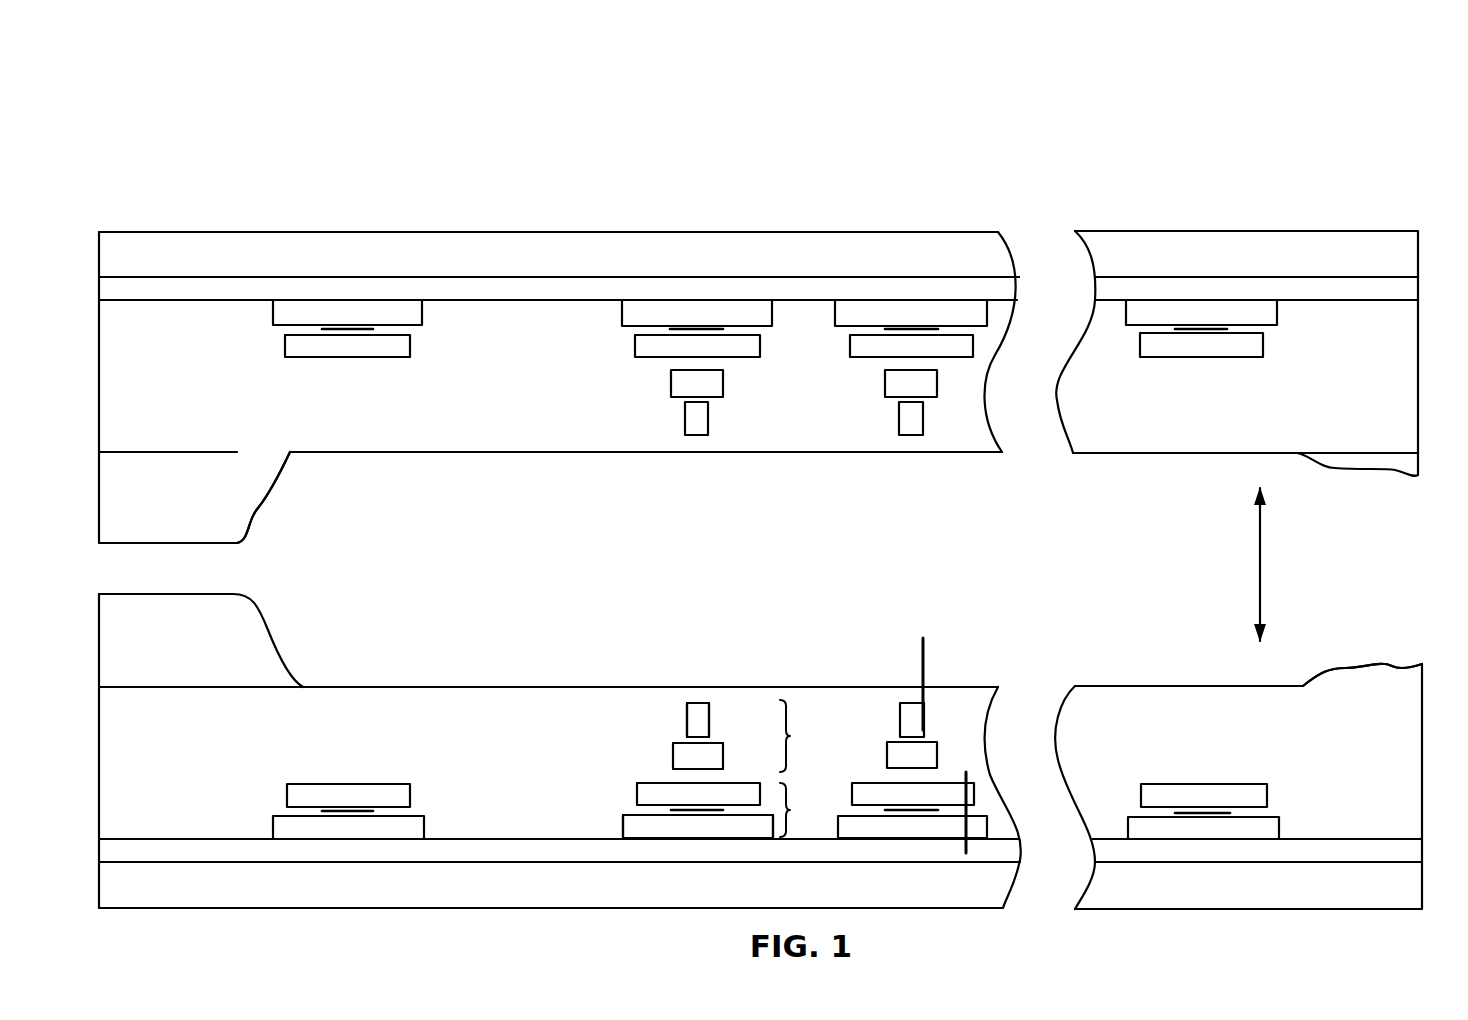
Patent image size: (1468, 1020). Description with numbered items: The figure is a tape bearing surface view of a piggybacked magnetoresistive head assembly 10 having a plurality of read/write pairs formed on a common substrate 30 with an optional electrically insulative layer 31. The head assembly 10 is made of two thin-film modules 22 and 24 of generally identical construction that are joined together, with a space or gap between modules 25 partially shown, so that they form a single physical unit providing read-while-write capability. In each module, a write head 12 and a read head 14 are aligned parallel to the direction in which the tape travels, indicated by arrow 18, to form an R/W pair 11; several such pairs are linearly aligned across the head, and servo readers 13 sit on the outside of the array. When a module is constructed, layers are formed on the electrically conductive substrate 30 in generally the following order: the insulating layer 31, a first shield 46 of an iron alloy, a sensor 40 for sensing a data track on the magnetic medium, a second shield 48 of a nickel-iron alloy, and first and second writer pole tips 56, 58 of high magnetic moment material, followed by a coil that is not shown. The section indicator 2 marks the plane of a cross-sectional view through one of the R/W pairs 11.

The magnetoresistive head assembly 10 is at (178, 203).
The R/W pair 11 is at (694, 660).
The write head 12 is at (800, 746).
The servo reader 13 is at (410, 773).
The read head 14 is at (800, 809).
The arrow 18 is at (1260, 574).
The thin-film module 22 is at (1295, 231).
The thin-film module 24 is at (1283, 909).
The space or gap between modules 25 is at (263, 504).
The substrate 30 is at (285, 264).
The electrically insulative layer 31 is at (1334, 846).
The sensor 40 is at (633, 808).
The first shield 46 is at (623, 827).
The second shield 48 is at (637, 790).
The first writer pole tip 56 is at (673, 758).
The second writer pole tip 58 is at (687, 728).
The section line 2- 2 is at (928, 662).